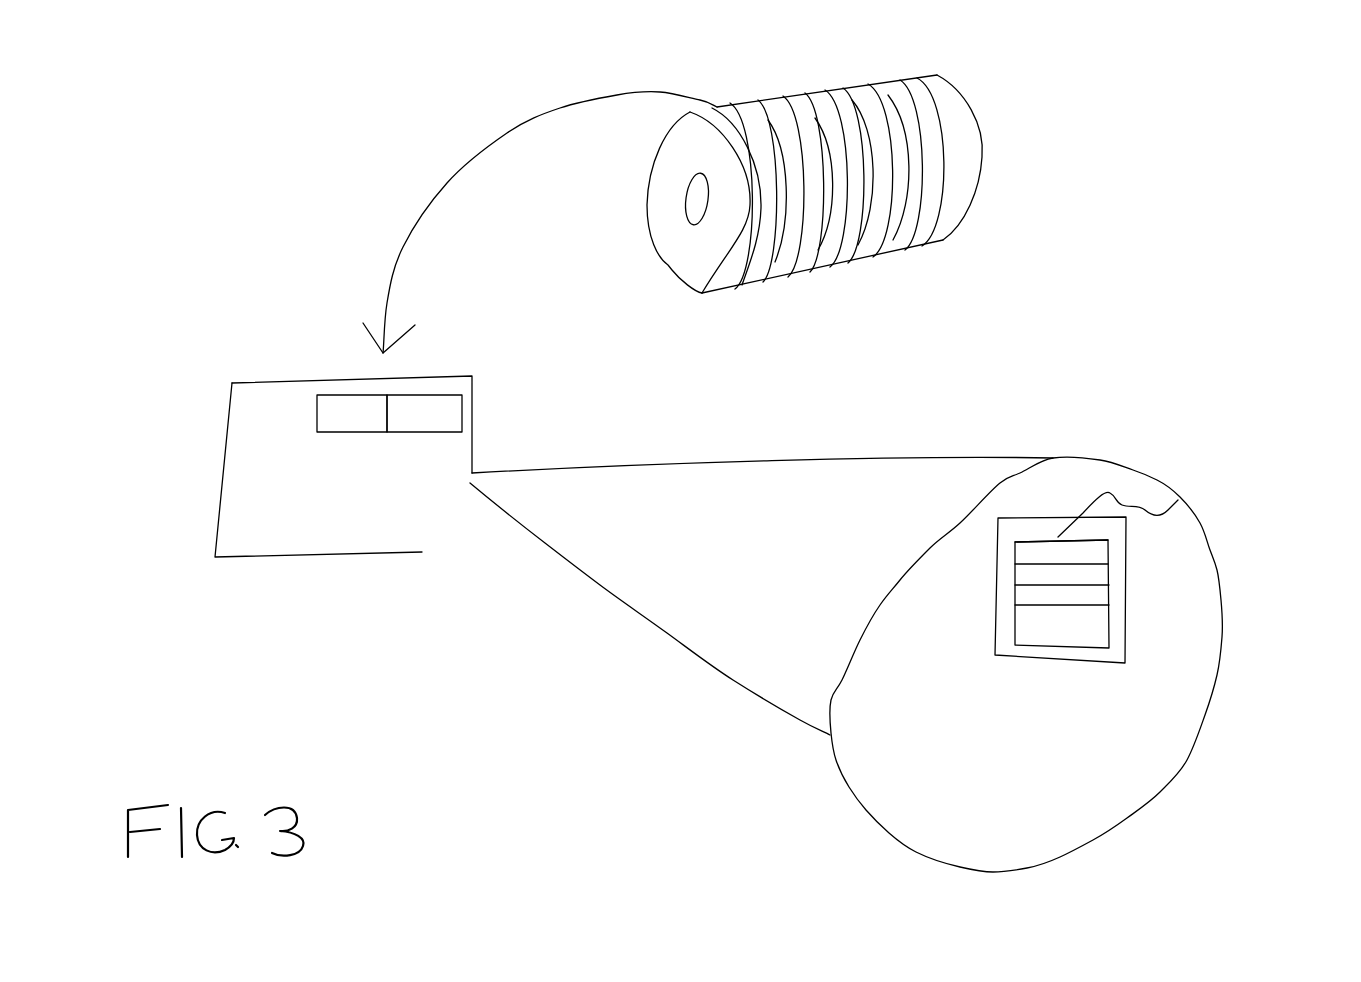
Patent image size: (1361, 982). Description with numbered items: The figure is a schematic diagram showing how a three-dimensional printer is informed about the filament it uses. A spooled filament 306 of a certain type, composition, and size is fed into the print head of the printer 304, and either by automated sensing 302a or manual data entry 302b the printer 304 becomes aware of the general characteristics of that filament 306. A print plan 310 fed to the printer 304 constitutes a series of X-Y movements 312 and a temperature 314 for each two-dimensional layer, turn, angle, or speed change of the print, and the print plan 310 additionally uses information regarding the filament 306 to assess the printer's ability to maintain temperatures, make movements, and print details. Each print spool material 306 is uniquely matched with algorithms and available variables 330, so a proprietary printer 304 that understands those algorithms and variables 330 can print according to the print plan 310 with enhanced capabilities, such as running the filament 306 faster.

The automated sensing 302a is at (352, 414).
The manual data entry 302b is at (424, 414).
The printer 304 is at (473, 405).
The filament 306 is at (560, 107).
The print plan 310 is at (1133, 568).
The X-Y movements 312 is at (1032, 581).
The temperature 314 is at (1088, 555).
The algorithms and available variables 330 is at (1083, 637).